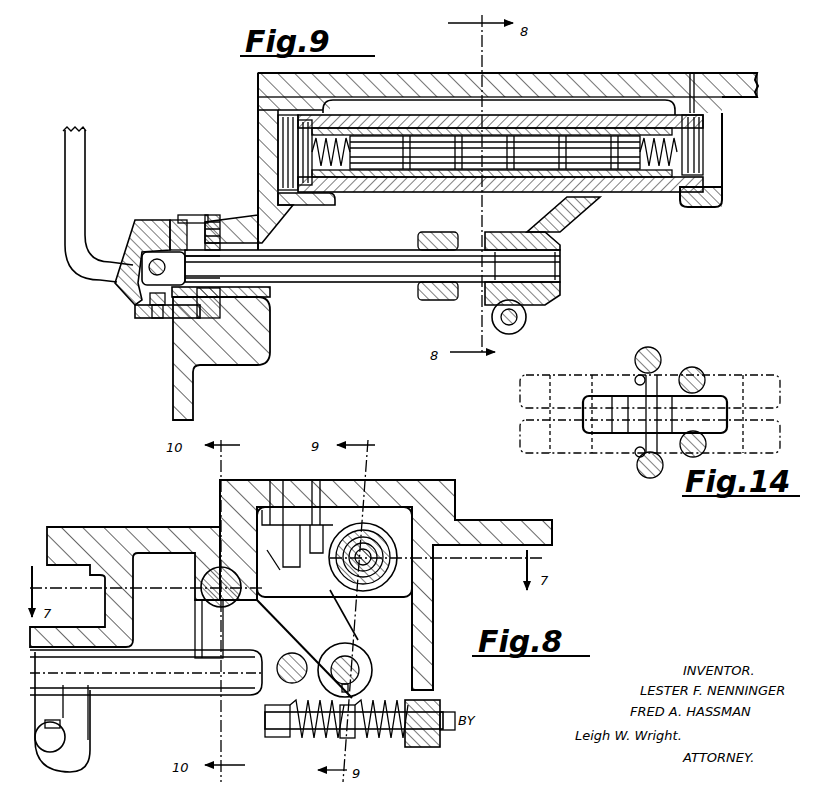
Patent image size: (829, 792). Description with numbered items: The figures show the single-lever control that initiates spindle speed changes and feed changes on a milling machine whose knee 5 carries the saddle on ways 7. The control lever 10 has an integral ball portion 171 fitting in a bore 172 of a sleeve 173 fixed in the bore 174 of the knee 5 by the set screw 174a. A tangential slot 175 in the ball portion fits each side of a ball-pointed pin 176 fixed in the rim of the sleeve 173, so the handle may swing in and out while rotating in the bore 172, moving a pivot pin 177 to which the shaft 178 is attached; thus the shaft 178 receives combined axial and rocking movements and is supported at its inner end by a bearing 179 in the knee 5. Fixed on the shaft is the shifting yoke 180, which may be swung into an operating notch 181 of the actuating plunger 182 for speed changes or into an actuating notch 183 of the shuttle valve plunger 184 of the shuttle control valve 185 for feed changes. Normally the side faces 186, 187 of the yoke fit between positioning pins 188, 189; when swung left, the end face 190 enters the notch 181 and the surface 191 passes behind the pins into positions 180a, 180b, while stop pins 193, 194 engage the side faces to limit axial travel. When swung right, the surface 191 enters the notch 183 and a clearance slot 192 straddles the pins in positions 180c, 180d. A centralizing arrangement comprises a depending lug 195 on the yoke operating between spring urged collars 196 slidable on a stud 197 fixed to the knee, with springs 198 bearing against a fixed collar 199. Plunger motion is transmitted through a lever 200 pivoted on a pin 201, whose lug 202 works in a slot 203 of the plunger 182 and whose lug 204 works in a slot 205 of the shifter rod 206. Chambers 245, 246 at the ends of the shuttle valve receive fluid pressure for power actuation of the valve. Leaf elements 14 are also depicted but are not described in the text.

In FIG. 9, the knee 5 is at (180, 383).
In FIG. 8, the knee 5 is at (107, 535).
In FIG. 8, the ways 7 is at (165, 527).
In FIG. 9, the control lever 10 is at (85, 163).
In FIG. 8, the spring tab 14 is at (340, 530).
In FIG. 9, the ball portion 171 is at (138, 243).
In FIG. 9, the bore 172 is at (196, 215).
In FIG. 9, the sleeve 173 is at (270, 294).
In FIG. 9, the bore 174 is at (270, 320).
In FIG. 9, the set screw 174a is at (225, 213).
In FIG. 9, the tangential slot 175 is at (135, 296).
In FIG. 9, the ball-pointed pin 176 is at (158, 318).
In FIG. 9, the pivot pin 177 is at (140, 257).
In FIG. 9, the shaft 178 is at (372, 266).
In FIG. 8, the shaft 178 is at (350, 668).
In FIG. 9, the bearing 179 is at (418, 247).
In FIG. 9, the shifting yoke 180 is at (545, 212).
In FIG. 14, the shifting yoke 180 is at (672, 433).
In FIG. 8, the shifting yoke 180 is at (307, 644).
In FIG. 14, the yoke position 180a is at (545, 368).
In FIG. 14, the yoke position 180b is at (525, 438).
In FIG. 14, the yoke position 180c is at (775, 375).
In FIG. 14, the yoke position 180d is at (775, 453).
In FIG. 8, the operating notch 181 is at (258, 633).
In FIG. 8, the actuating plunger 182 is at (212, 580).
In FIG. 9, the actuating notch 183 is at (578, 137).
In FIG. 8, the actuating notch 183 is at (346, 610).
In FIG. 9, the shuttle valve plunger 184 is at (494, 152).
In FIG. 9, the shuttle control valve 185 is at (634, 183).
In FIG. 8, the shuttle control valve 185 is at (382, 532).
In FIG. 14, the side face 186 is at (600, 396).
In FIG. 14, the side face 187 is at (606, 433).
In FIG. 14, the positioning pin 188 is at (695, 372).
In FIG. 14, the positioning pin 189 is at (700, 452).
In FIG. 8, the positioning pin 189 is at (307, 525).
In FIG. 14, the end face 190 is at (645, 374).
In FIG. 8, the end face 190 is at (253, 560).
In FIG. 14, the surface 191 is at (660, 398).
In FIG. 8, the surface 191 is at (338, 557).
In FIG. 14, the clearance slot 192 is at (617, 396).
In FIG. 8, the clearance slot 192 is at (300, 566).
In FIG. 14, the stop pin 193 is at (665, 400).
In FIG. 14, the stop pin 194 is at (645, 470).
In FIG. 8, the stop pin 194 is at (283, 525).
In FIG. 9, the lug 195 is at (530, 292).
In FIG. 8, the lug 195 is at (372, 700).
In FIG. 9, the spring urged collars 196 is at (527, 327).
In FIG. 8, the spring urged collars 196 is at (297, 740).
In FIG. 9, the stud 197 is at (520, 317).
In FIG. 8, the stud 197 is at (265, 718).
In FIG. 8, the springs 198 is at (388, 712).
In FIG. 8, the fixed collar 199 is at (270, 734).
In FIG. 8, the lever 200 is at (196, 628).
In FIG. 8, the pin 201 is at (175, 680).
In FIG. 8, the lug 202 is at (215, 600).
In FIG. 8, the slot 203 is at (212, 590).
In FIG. 8, the lug 204 is at (70, 708).
In FIG. 8, the slot 205 is at (65, 722).
In FIG. 8, the shifter rod 206 is at (65, 740).
In FIG. 9, the chamber 245 is at (675, 180).
In FIG. 9, the chamber 246 is at (334, 207).